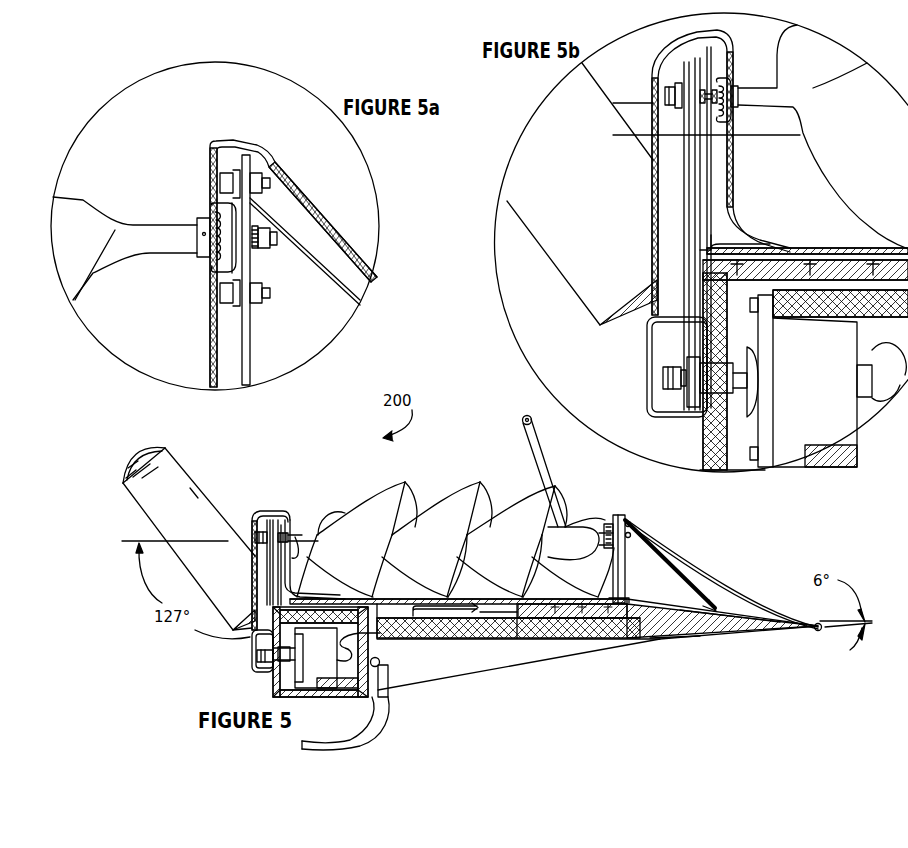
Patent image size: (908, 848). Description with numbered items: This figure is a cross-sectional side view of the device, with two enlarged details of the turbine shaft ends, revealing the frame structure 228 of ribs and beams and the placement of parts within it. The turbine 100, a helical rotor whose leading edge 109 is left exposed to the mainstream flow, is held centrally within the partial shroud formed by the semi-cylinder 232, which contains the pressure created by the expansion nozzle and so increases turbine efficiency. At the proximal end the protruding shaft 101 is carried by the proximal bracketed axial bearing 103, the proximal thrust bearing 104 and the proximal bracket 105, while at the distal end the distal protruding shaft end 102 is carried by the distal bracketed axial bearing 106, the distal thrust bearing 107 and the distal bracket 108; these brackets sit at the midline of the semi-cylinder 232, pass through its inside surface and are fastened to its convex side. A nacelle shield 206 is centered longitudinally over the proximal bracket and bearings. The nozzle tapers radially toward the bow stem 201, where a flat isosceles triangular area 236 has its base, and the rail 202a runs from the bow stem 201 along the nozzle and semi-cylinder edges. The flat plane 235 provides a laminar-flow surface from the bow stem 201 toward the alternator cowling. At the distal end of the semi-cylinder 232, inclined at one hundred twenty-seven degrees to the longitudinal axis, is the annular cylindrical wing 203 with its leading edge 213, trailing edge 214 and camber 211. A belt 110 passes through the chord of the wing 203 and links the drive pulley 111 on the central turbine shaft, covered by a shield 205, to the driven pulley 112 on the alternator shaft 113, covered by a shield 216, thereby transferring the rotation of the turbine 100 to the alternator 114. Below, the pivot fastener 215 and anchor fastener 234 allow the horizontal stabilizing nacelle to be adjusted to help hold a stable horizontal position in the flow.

In FIG. 5, the turbine 100 is at (432, 515).
In FIG. 5, the proximal protruding shaft 101 is at (596, 530).
In FIG. 5A, the proximal protruding shaft 101 is at (165, 230).
In FIG. 5, the distal protruding shaft end 102 is at (303, 535).
In FIG. 5B, the distal protruding shaft end 102 is at (780, 89).
In FIG. 5, the proximal bracketed axial bearing 103 is at (609, 522).
In FIG. 5A, the proximal bracketed axial bearing 103 is at (212, 260).
In FIG. 5, the proximal thrust bearing 104 is at (630, 524).
In FIG. 5A, the proximal thrust bearing 104 is at (253, 248).
In FIG. 5, the proximal bracket 105 is at (632, 550).
In FIG. 5A, the proximal bracket 105 is at (283, 334).
In FIG. 5, the distal bracketed axial bearing 106 is at (280, 530).
In FIG. 5B, the distal bracketed axial bearing 106 is at (727, 92).
In FIG. 5, the distal thrust bearing 107 is at (288, 530).
In FIG. 5B, the distal thrust bearing 107 is at (732, 118).
In FIG. 5, the distal bracket 108 is at (280, 560).
In FIG. 5B, the distal bracket 108 is at (720, 242).
In FIG. 5, the leading edge of the helical rotor 109 is at (508, 458).
In FIG. 5B, the belt 110 is at (686, 62).
In FIG. 5B, the drive pulley 111 is at (683, 85).
In FIG. 5B, the driven pulley 112 is at (683, 365).
In FIG. 5, the alternator shaft 113 is at (265, 656).
In FIG. 5B, the alternator shaft 113 is at (663, 385).
In FIG. 5B, the alternator 114 is at (780, 418).
In FIG. 5, the bow stem 201 is at (815, 631).
In FIG. 5, the rail 202a is at (252, 540).
In FIG. 5, the annular cylindrical wing 203 is at (187, 507).
In FIG. 5B, the annular cylindrical wing 203 is at (598, 275).
In FIG. 5, the shield 205 is at (290, 580).
In FIG. 5B, the shield 205 is at (652, 217).
In FIG. 5, the nacelle shield 206 is at (655, 548).
In FIG. 5A, the nacelle shield 206 is at (273, 150).
In FIG. 5, the camber 211 is at (152, 452).
In FIG. 5, the leading edge 213 is at (193, 478).
In FIG. 5, the trailing edge 214 is at (150, 520).
In FIG. 5, the pivot fastener 215 is at (390, 693).
In FIG. 5, the shield 216 is at (310, 652).
In FIG. 5B, the shield 216 is at (647, 355).
In FIG. 5, the frame structure 228 is at (433, 631).
In FIG. 5, the semi-cylinder 232 is at (488, 603).
In FIG. 5B, the semi-cylinder 232 is at (845, 250).
In FIG. 5, the anchor fastener 234 is at (512, 652).
In FIG. 5, the flat plane 235 is at (683, 633).
In FIG. 5, the flat isosceles triangular area 236 is at (743, 613).